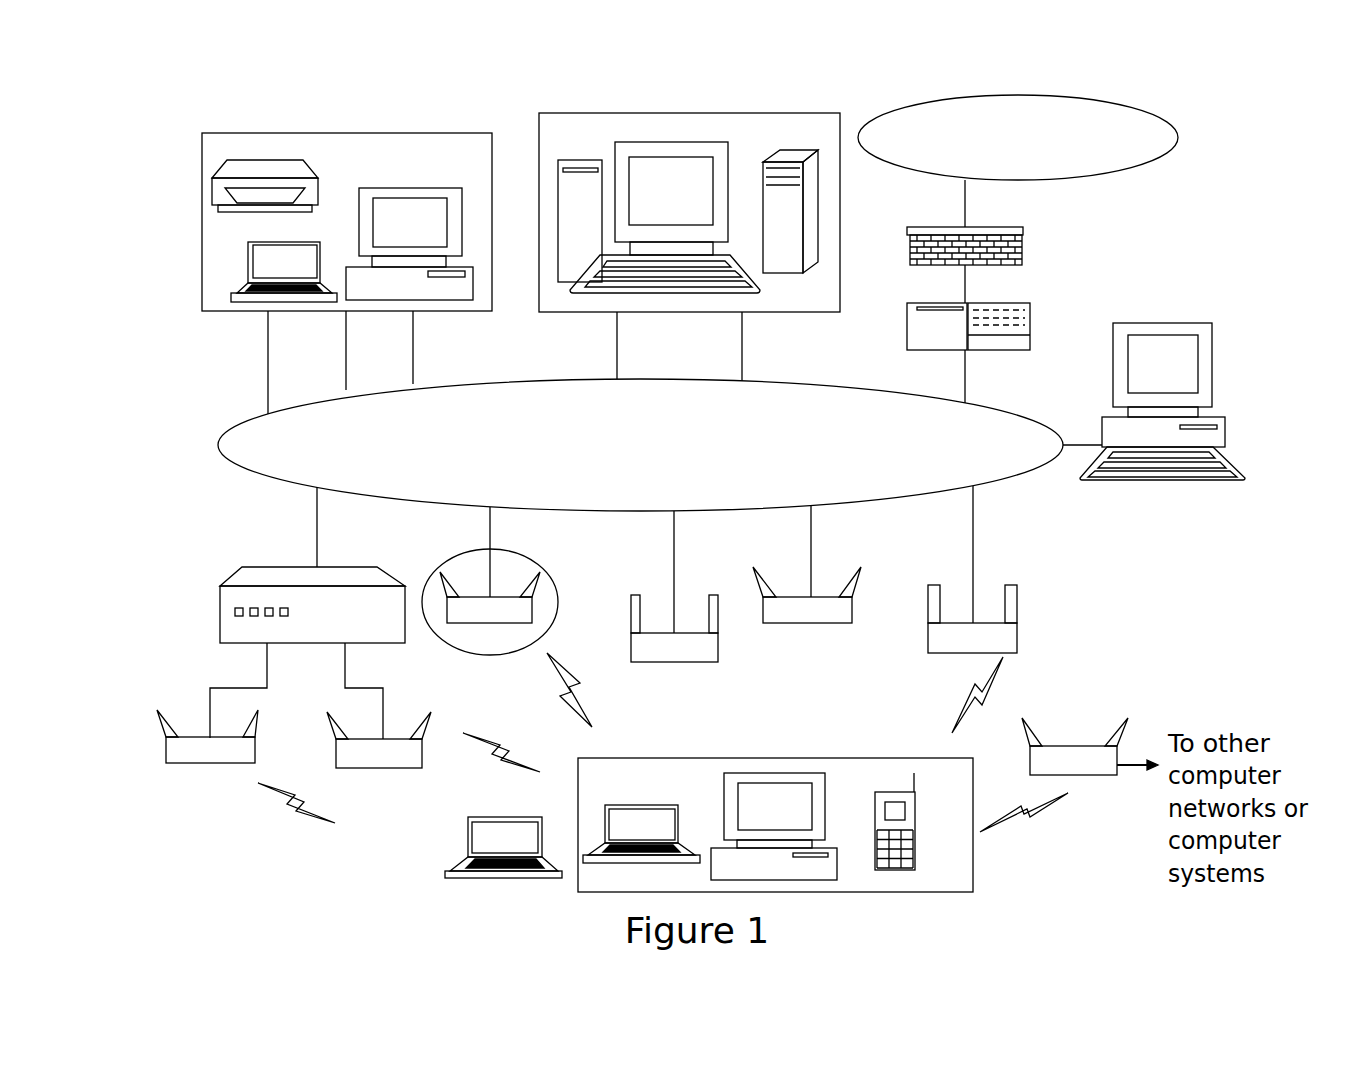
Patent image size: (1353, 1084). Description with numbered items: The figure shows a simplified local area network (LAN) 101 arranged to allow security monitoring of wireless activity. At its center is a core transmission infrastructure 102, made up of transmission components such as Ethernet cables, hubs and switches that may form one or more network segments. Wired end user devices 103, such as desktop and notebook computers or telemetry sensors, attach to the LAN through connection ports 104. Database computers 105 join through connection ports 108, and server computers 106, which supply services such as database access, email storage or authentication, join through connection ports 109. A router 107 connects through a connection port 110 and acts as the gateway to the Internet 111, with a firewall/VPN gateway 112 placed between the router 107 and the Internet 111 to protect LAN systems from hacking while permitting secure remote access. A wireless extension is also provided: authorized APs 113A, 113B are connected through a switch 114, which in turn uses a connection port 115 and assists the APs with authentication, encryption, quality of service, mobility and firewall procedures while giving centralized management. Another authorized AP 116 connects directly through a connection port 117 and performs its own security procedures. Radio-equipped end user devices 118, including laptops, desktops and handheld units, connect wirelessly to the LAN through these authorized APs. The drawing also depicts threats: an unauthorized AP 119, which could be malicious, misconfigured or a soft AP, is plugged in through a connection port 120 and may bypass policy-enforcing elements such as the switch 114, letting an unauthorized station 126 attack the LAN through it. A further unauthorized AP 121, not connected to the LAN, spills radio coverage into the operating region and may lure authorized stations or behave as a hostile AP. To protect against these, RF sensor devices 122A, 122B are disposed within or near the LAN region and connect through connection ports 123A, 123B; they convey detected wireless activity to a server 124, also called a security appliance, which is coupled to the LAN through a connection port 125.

The local area network (LAN) 101 is at (262, 93).
The core transmission infrastructure 102 is at (237, 425).
The end user devices 103 is at (424, 133).
The connection ports 104 is at (443, 350).
The database computers 105 is at (646, 142).
The server computers 106 is at (781, 150).
The router 107 is at (907, 342).
The connection ports 108 is at (617, 342).
The connection ports 109 is at (742, 342).
The connection port 110 is at (972, 373).
The Internet 111 is at (1160, 113).
The firewall/VPN gateway 112 is at (1023, 247).
The authorized AP 113A is at (229, 765).
The authorized AP 113B is at (405, 768).
The switch 114 is at (237, 565).
The connection port 115 is at (317, 520).
The authorized AP 116 is at (838, 623).
The connection port 117 is at (811, 530).
The end user devices 118 is at (905, 758).
The unauthorized AP 119 is at (462, 623).
The connection port 120 is at (490, 538).
The unauthorized AP 121 is at (1077, 775).
The sensor device 122A is at (693, 662).
The sensor device 122B is at (1017, 632).
The connection port 123A is at (674, 537).
The connection port 123B is at (973, 539).
The server 124 is at (1200, 323).
The connection port 125 is at (1080, 445).
The unauthorized station 126 is at (450, 865).